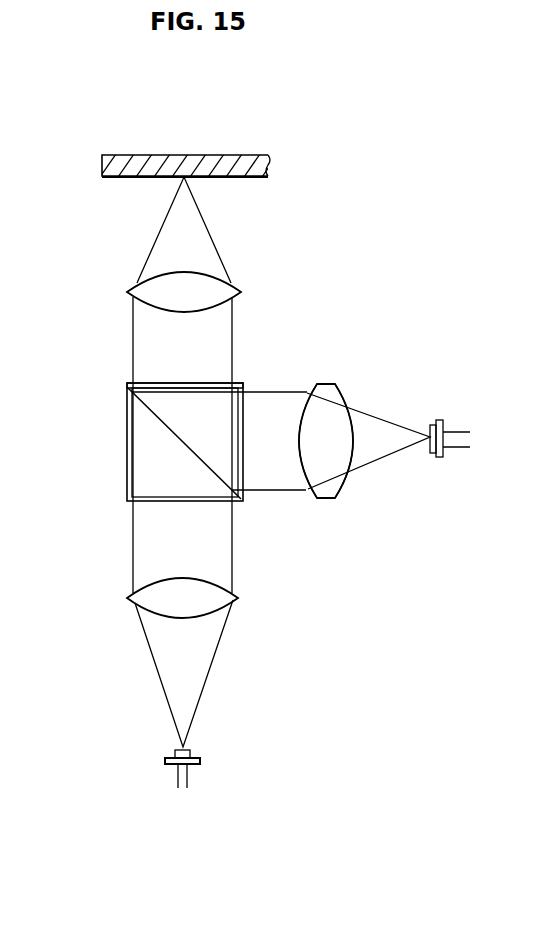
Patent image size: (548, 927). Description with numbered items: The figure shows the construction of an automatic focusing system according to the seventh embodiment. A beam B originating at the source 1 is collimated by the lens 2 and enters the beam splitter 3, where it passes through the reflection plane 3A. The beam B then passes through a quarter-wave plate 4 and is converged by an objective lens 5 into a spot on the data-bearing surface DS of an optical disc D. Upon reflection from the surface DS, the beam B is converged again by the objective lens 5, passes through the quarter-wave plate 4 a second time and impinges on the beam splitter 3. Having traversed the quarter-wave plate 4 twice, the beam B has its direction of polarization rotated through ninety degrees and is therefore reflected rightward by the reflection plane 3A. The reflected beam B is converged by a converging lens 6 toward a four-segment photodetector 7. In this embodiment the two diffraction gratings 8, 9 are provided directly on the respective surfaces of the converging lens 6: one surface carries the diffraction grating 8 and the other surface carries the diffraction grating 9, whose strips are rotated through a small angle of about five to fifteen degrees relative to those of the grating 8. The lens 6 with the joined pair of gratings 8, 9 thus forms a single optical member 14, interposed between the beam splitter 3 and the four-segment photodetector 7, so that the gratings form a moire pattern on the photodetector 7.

The optical disc D is at (243, 155).
The data-bearing surface DS is at (238, 178).
The objective lens 5 is at (241, 291).
The quarter-wave plate 4 is at (126, 384).
The reflection plane 3A is at (152, 410).
The beam splitter 3 is at (128, 458).
The optical member 14 is at (332, 382).
The diffraction grating 8 is at (300, 476).
The converging lens 6 is at (323, 495).
The diffraction grating 9 is at (345, 492).
The four-segment photodetector 7 is at (432, 425).
The collimator lens 2 is at (238, 602).
The beam B is at (208, 670).
The semiconductor laser 1 is at (191, 753).